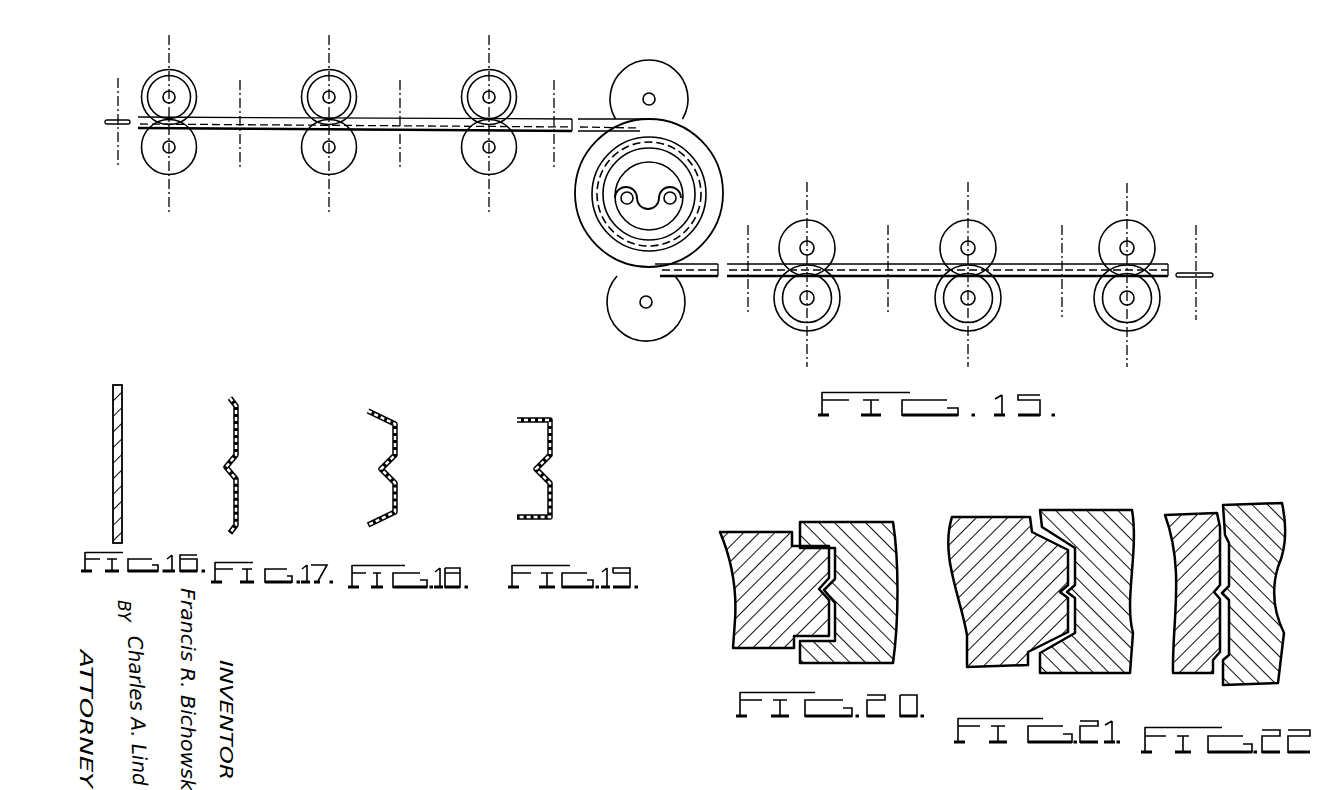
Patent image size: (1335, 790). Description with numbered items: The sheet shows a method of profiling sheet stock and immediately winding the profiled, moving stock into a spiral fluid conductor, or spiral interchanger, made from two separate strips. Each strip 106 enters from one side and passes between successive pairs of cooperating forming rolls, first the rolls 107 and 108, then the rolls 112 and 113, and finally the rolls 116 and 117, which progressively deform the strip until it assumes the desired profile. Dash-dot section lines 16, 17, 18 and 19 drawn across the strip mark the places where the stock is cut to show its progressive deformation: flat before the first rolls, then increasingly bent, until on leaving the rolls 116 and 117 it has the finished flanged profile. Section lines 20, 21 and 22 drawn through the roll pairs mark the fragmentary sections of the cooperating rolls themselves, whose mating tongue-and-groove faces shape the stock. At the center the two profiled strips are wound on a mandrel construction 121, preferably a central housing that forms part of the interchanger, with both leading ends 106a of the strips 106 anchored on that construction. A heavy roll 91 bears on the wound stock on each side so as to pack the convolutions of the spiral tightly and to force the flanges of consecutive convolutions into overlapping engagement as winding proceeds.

In FIG. 15, the heavy roll 91 is at (685, 78).
In FIG. 15, the strip 106 is at (112, 120).
In FIG. 16, the strip 106 is at (124, 420).
In FIG. 15, the leading end 106a is at (652, 193).
In FIG. 15, the forming roll 107 is at (186, 74).
In FIG. 22, the forming roll 107 is at (1190, 513).
In FIG. 15, the forming roll 108 is at (181, 170).
In FIG. 22, the forming roll 108 is at (1258, 503).
In FIG. 15, the forming roll 112 is at (338, 171).
In FIG. 21, the forming roll 112 is at (1085, 510).
In FIG. 15, the forming roll 113 is at (346, 74).
In FIG. 21, the forming roll 113 is at (998, 517).
In FIG. 15, the forming roll 116 is at (497, 171).
In FIG. 20, the forming roll 116 is at (850, 522).
In FIG. 15, the forming roll 117 is at (506, 74).
In FIG. 20, the forming roll 117 is at (760, 531).
In FIG. 15, the mandrel construction 121 is at (668, 192).
In FIG. 15, the section line 16— 16 is at (118, 80).
In FIG. 15, the section line 17— 17 is at (240, 80).
In FIG. 15, the section line 18— 18 is at (400, 80).
In FIG. 15, the section line 19— 19 is at (554, 80).
In FIG. 15, the section line 20— 20 is at (489, 35).
In FIG. 15, the section line 21— 21 is at (329, 35).
In FIG. 15, the section line 22— 22 is at (169, 35).